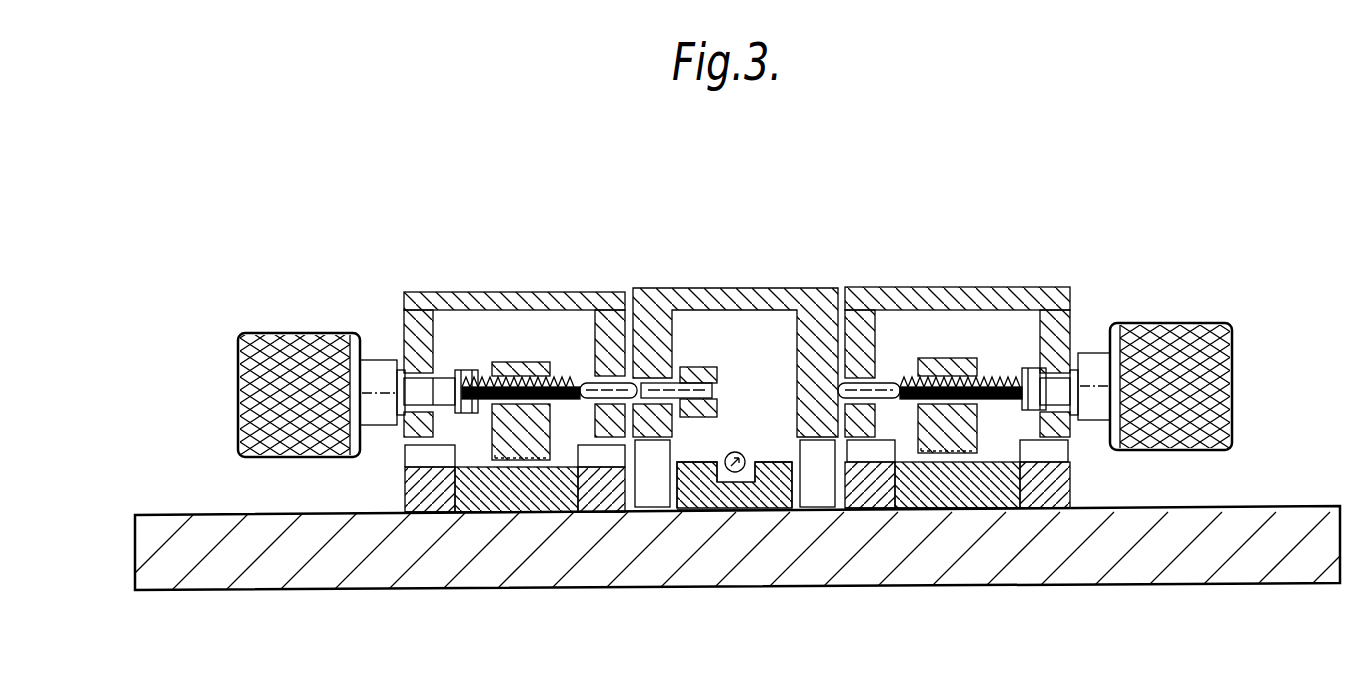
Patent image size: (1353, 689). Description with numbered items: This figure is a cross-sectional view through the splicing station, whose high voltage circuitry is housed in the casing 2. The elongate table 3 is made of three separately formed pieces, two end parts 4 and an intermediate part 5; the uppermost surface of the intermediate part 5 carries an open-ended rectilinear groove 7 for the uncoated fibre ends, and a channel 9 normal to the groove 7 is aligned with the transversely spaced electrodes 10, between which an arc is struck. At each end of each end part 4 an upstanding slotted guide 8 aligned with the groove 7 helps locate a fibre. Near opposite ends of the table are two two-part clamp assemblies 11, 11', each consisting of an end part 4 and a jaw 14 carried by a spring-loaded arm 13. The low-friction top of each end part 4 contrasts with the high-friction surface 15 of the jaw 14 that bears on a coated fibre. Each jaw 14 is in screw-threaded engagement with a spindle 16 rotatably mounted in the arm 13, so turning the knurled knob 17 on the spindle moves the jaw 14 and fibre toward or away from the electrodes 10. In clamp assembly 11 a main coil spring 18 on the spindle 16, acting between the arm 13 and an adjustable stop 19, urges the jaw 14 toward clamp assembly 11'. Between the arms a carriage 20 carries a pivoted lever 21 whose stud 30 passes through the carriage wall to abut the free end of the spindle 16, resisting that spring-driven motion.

The casing 2 is at (1140, 550).
The elongate table 3 is at (545, 514).
The end part 4 is at (483, 497).
The intermediate part 5 is at (690, 510).
The rectilinear groove 7 is at (771, 458).
The slotted guide 8 is at (425, 500).
The channel 9 is at (730, 510).
The electrode 10 is at (737, 451).
The two-part clamp assembly 11 is at (480, 343).
The two-part clamp assembly 11' is at (997, 339).
The spring-loaded arm 13 is at (533, 300).
The jaw 14 is at (520, 362).
The surface of the jaw 15 is at (515, 460).
The spindle 16 is at (477, 385).
The knurled knob 17 is at (250, 366).
The main coil spring 18 is at (410, 426).
The adjustable stop 19 is at (465, 414).
The carriage 20 is at (776, 283).
The lever 21 is at (702, 367).
The stud 30 is at (668, 416).